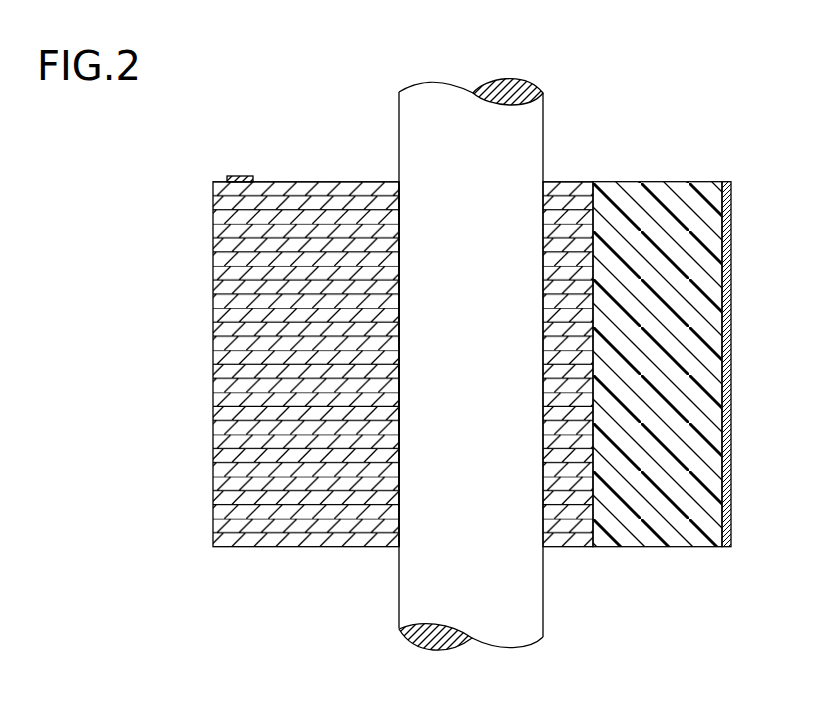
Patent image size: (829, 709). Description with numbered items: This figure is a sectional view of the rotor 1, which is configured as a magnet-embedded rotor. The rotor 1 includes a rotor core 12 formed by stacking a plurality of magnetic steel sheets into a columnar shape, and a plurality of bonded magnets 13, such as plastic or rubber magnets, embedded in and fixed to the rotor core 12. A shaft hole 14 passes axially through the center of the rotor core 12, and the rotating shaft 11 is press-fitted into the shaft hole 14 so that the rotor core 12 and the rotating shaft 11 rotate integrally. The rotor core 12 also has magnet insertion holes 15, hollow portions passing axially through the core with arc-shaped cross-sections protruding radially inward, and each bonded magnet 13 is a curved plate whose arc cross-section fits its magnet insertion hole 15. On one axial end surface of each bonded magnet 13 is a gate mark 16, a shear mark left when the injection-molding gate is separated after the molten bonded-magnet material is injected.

The rotor 1 is at (763, 124).
The rotating shaft 11 is at (538, 600).
The rotor core 12 is at (213, 184).
The bonded magnet 13 is at (638, 183).
The shaft hole 14 is at (399, 521).
The magnet insertion hole 15 is at (722, 220).
The gate mark 16 is at (233, 176).